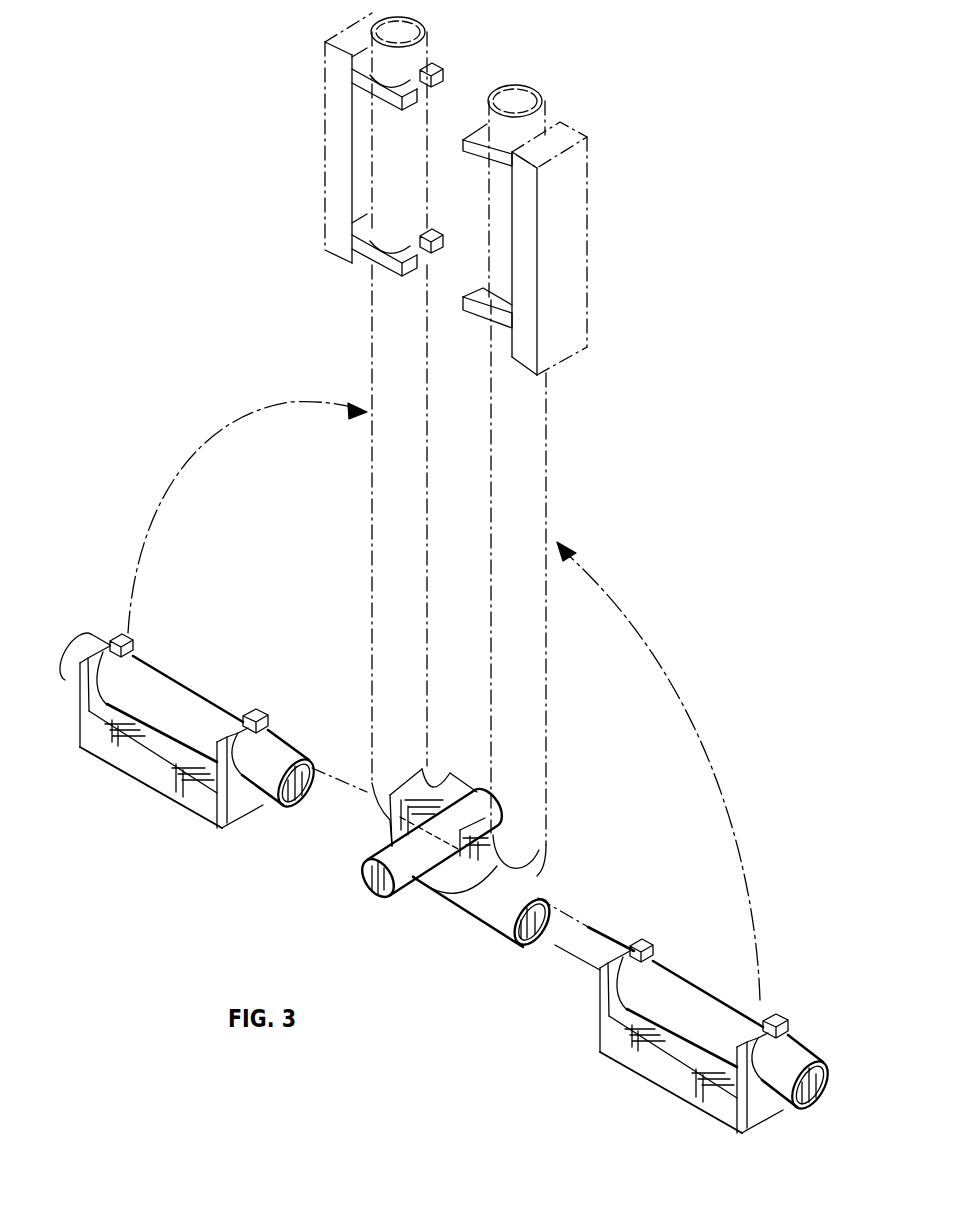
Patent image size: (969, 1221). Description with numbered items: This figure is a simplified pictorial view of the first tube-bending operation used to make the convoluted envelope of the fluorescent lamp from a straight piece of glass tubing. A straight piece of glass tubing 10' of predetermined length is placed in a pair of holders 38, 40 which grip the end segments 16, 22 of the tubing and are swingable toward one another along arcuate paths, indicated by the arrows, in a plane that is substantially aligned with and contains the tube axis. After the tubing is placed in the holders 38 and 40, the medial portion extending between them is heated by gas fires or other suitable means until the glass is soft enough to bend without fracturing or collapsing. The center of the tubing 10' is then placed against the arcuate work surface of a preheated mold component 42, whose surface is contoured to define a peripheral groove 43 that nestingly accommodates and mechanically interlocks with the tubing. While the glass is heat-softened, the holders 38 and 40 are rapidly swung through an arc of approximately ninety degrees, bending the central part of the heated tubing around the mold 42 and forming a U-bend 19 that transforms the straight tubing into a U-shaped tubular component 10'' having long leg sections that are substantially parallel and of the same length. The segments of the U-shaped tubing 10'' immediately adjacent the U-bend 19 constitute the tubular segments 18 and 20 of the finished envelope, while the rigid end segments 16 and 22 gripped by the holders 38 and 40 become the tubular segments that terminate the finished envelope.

The straight piece of glass tubing 10' is at (427, 881).
The U-shaped tubular component 10'' is at (548, 450).
The end segment 16 is at (405, 182).
The tubular segment 18 is at (393, 620).
The U-bend 19 is at (452, 912).
The tubular segment 20 is at (515, 650).
The end segment 22 is at (503, 250).
The holder 38 is at (342, 160).
The holder 40 is at (565, 229).
The mold component 42 is at (445, 790).
The peripheral groove 43 is at (522, 847).